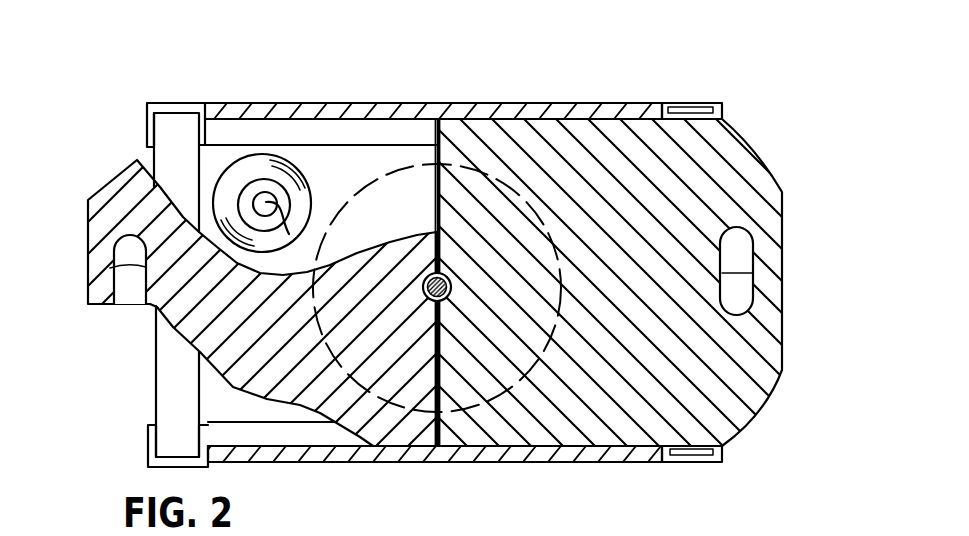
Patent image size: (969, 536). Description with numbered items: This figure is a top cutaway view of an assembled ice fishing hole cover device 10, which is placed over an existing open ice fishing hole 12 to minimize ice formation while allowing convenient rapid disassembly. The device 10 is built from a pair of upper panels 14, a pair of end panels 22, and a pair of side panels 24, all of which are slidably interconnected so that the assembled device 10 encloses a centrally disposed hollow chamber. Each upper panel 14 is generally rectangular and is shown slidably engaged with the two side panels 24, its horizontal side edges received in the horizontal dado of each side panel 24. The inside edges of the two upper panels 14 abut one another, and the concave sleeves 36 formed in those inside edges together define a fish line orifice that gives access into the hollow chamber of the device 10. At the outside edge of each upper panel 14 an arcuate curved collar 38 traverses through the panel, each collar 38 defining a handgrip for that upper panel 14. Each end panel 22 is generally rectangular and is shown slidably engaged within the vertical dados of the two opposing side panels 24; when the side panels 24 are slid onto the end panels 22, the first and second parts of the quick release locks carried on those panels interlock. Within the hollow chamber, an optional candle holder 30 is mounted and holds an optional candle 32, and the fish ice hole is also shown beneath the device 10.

The ice fishing hole cover device 10 is at (188, 90).
The open ice fishing hole 12 is at (365, 200).
The upper panel 14 is at (120, 207).
The end panel 22 is at (677, 107).
The side panel 24 is at (463, 103).
The candle holder 30 is at (292, 177).
The candle 32 is at (257, 190).
The concave sleeve 36 is at (430, 275).
The arcuate curved collar 38 is at (110, 268).